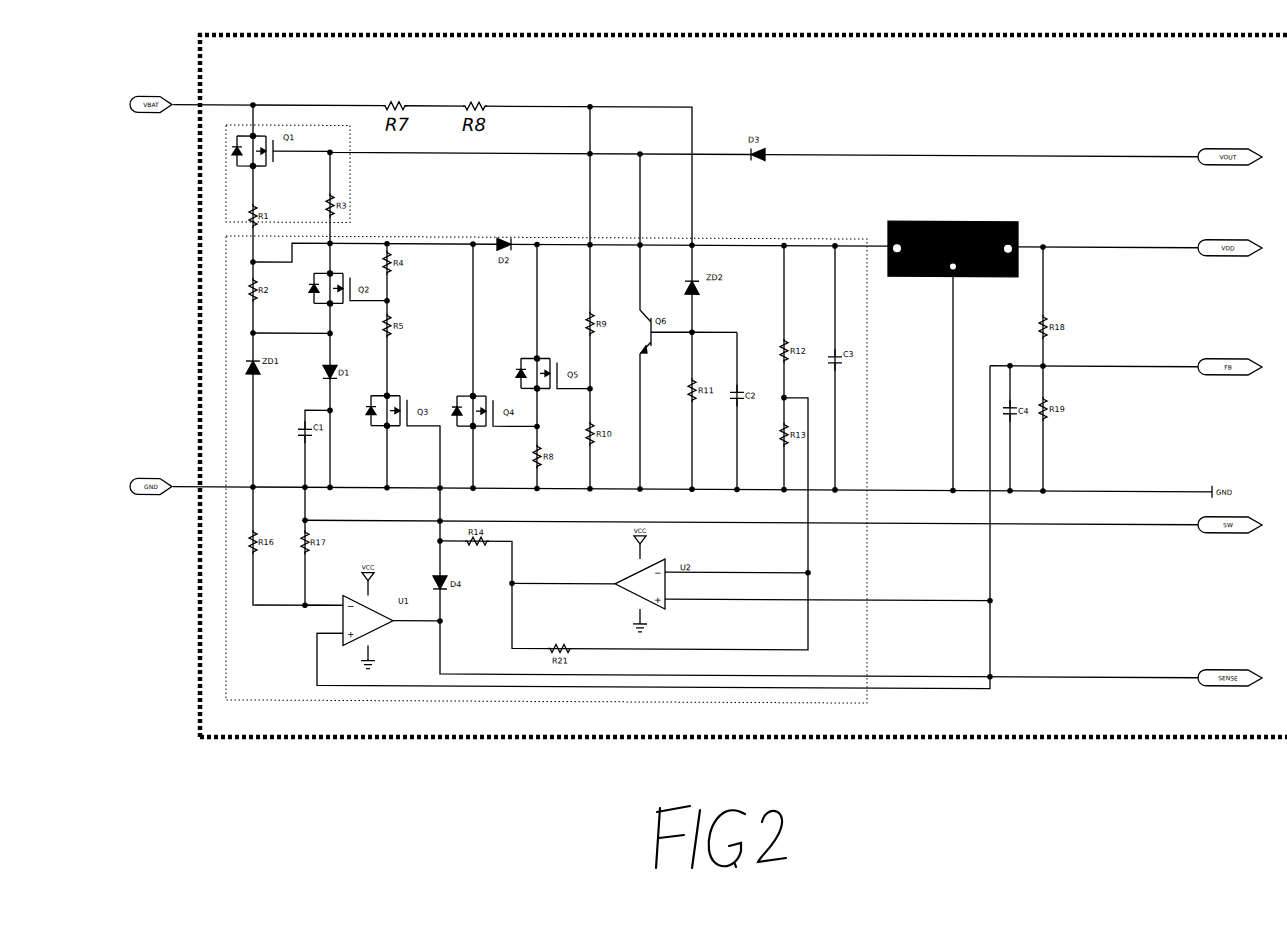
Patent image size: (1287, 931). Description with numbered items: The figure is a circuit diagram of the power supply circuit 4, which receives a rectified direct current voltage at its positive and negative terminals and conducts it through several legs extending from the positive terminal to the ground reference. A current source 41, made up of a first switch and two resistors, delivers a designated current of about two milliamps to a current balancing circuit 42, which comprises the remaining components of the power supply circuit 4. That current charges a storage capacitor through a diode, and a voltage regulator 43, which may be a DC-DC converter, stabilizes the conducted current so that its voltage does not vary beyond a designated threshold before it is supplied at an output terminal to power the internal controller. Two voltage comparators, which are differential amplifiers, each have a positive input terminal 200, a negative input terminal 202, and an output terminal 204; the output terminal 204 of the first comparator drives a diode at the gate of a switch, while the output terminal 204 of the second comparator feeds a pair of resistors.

The power supply circuit 4 is at (1240, 90).
The current source 41 is at (352, 188).
The current balancing circuit 42 is at (286, 692).
The voltage regulator 43 is at (953, 242).
The positive input terminal 200 is at (331, 629).
The negative input terminal 202 is at (324, 603).
The output terminal 204 is at (582, 586).